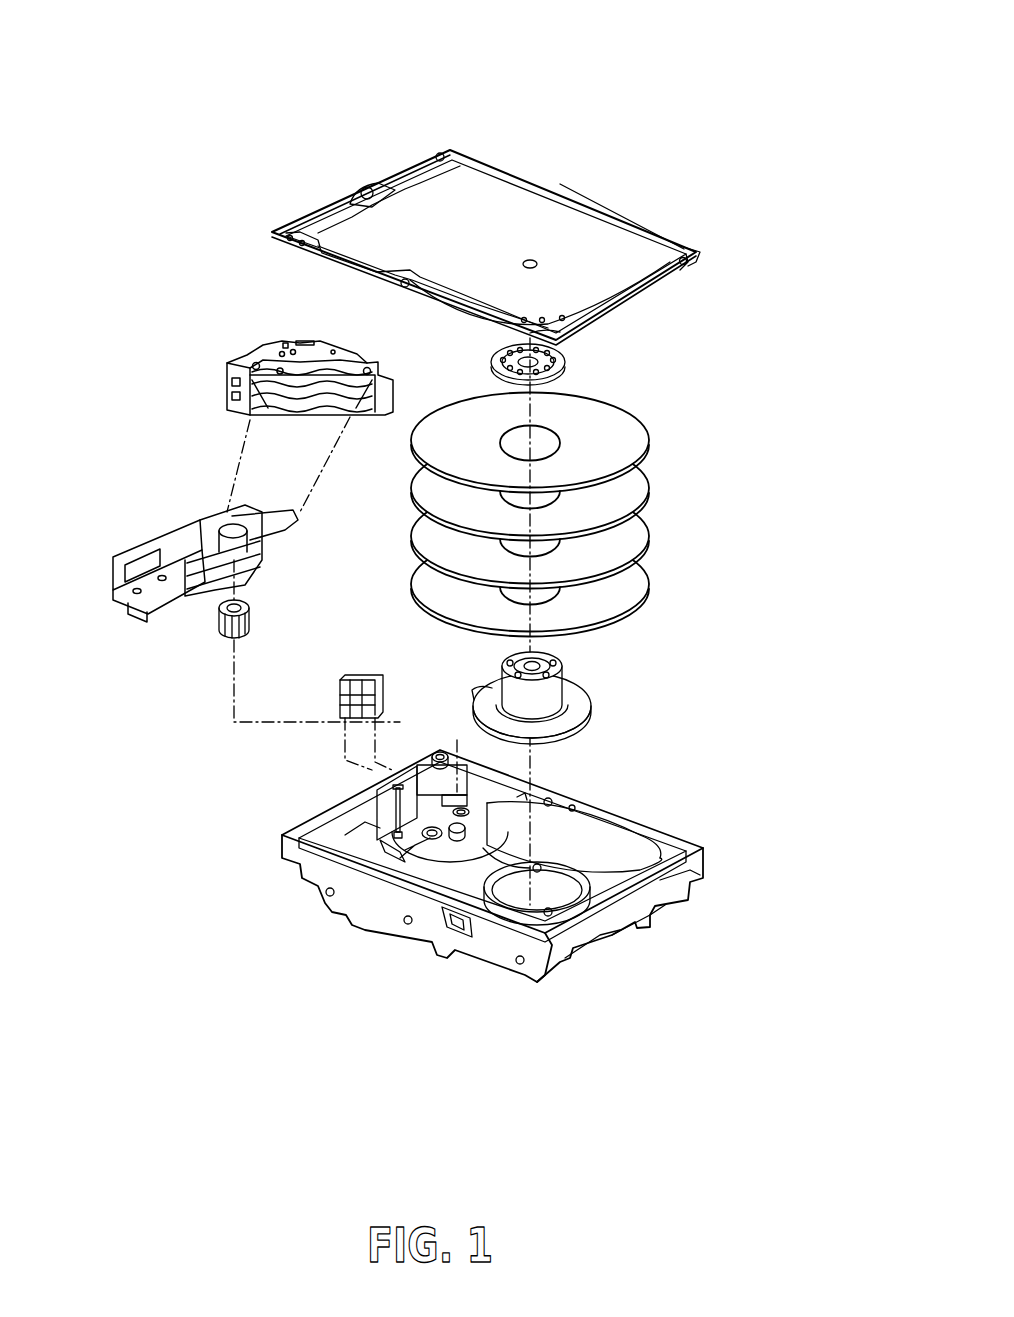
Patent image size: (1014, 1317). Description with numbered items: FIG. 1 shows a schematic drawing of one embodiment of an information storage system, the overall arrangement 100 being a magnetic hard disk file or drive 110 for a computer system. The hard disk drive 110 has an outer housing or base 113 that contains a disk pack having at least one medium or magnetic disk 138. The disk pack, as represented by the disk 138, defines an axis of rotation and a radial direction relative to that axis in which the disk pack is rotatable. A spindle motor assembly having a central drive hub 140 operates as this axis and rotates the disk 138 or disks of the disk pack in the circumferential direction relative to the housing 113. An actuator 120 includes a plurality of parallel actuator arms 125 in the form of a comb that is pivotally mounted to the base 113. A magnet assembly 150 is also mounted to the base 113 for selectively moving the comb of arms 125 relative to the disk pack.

The disk drive 100 is at (178, 24).
The hard disk drive 110 is at (690, 968).
The base 113 is at (298, 853).
The actuator 120 is at (97, 500).
The actuator arms 125 is at (214, 588).
The magnetic disk 138 is at (683, 377).
The central drive hub 140 is at (165, 528).
The magnet assembly 150 is at (227, 345).